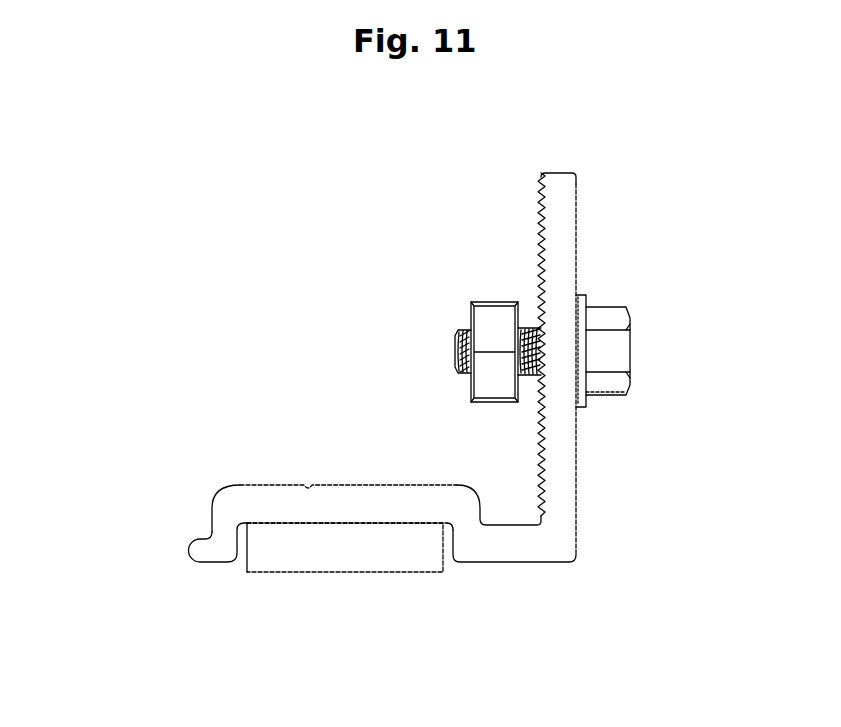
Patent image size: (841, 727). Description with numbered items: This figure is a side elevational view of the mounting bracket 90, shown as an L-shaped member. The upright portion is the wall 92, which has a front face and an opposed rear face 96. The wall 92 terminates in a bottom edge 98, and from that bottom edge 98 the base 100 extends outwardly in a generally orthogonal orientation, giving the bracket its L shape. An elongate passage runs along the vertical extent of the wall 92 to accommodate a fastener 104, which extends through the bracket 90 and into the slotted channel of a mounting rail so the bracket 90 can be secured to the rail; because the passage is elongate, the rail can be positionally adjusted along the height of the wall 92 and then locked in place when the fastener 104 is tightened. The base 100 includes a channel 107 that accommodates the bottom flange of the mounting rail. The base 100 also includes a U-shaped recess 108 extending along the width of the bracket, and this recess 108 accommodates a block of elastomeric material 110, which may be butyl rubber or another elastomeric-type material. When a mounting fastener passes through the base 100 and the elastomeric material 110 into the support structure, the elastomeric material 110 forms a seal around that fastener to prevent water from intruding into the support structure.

The mounting bracket 90 is at (596, 549).
The wall 92 is at (558, 195).
The rear face 96 is at (577, 210).
The bottom edge 98 is at (548, 562).
The base 100 is at (200, 551).
The fastener 104 is at (632, 350).
The channel 107 is at (505, 525).
The U-shaped recess 108 is at (243, 565).
The block of elastomeric material 110 is at (407, 572).